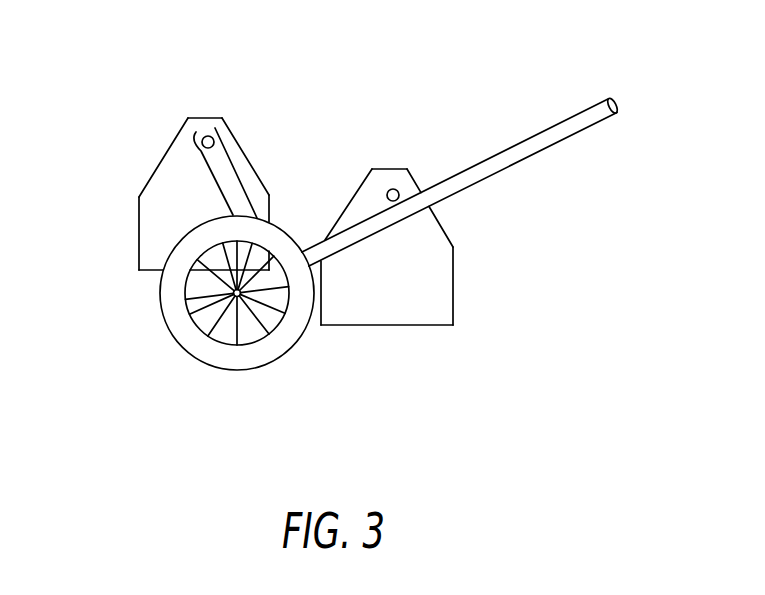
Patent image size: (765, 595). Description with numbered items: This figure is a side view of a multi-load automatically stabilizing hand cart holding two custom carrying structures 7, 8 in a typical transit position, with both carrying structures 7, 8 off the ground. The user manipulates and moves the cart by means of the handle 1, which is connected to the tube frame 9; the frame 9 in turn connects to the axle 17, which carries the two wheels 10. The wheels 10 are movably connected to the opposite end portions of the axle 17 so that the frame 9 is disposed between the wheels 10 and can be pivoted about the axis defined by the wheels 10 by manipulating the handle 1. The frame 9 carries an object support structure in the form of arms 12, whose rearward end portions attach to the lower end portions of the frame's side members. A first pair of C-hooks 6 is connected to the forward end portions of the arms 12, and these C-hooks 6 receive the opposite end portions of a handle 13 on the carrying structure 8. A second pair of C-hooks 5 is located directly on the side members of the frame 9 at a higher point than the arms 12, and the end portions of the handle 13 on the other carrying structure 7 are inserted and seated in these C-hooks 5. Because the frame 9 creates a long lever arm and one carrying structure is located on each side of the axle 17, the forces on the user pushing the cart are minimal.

The handle 1 is at (620, 101).
The second C-hooks 5 is at (390, 182).
The first C-hooks 6 is at (213, 129).
The carrying structure 7 is at (350, 195).
The carrying structure 8 is at (158, 192).
The tube frame 9 is at (488, 168).
The wheels 10 is at (281, 335).
The arms 12 is at (222, 173).
The handle 13 is at (187, 121).
The axle 17 is at (233, 300).